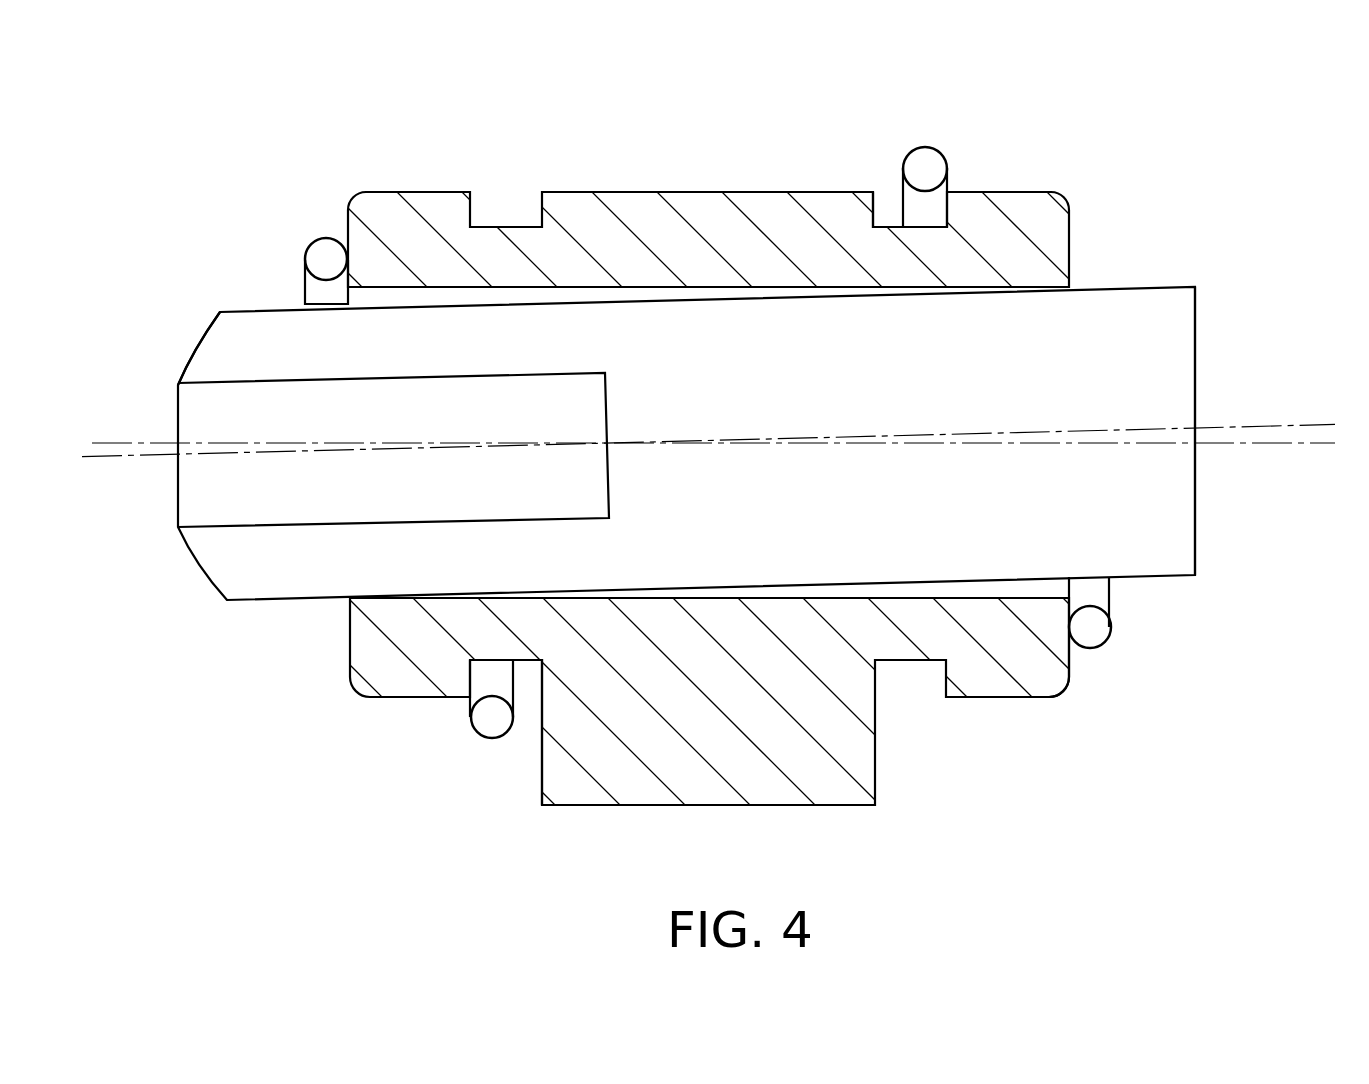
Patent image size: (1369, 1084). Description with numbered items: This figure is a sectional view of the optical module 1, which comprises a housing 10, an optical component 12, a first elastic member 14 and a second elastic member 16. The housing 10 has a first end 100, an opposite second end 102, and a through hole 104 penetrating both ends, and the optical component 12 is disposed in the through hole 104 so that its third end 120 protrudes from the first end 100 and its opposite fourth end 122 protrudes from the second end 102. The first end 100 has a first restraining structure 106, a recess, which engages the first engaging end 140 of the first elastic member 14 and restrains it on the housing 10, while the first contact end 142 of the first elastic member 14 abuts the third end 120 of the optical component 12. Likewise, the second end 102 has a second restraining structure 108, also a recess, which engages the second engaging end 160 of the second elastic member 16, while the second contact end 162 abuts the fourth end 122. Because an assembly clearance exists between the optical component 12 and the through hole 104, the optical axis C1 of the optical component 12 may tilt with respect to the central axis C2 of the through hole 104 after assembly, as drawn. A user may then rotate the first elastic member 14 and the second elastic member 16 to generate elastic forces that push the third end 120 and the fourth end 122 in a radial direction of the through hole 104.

The optical module 1 is at (1228, 109).
The housing 10 is at (568, 190).
The first end 100 is at (347, 637).
The second end 102 is at (1070, 663).
The through hole 104 is at (331, 307).
The first restraining structure 106 is at (537, 712).
The second restraining structure 108 is at (893, 176).
The optical component 12 is at (1105, 310).
The third end 120 is at (187, 358).
The fourth end 122 is at (1197, 314).
The first elastic member 14 is at (305, 268).
The first engaging end 140 is at (485, 738).
The first contact end 142 is at (326, 238).
The second elastic member 16 is at (1110, 593).
The second engaging end 160 is at (920, 149).
The second contact end 162 is at (1103, 645).
The optical axis C1 is at (105, 460).
The central axis C2 is at (112, 443).